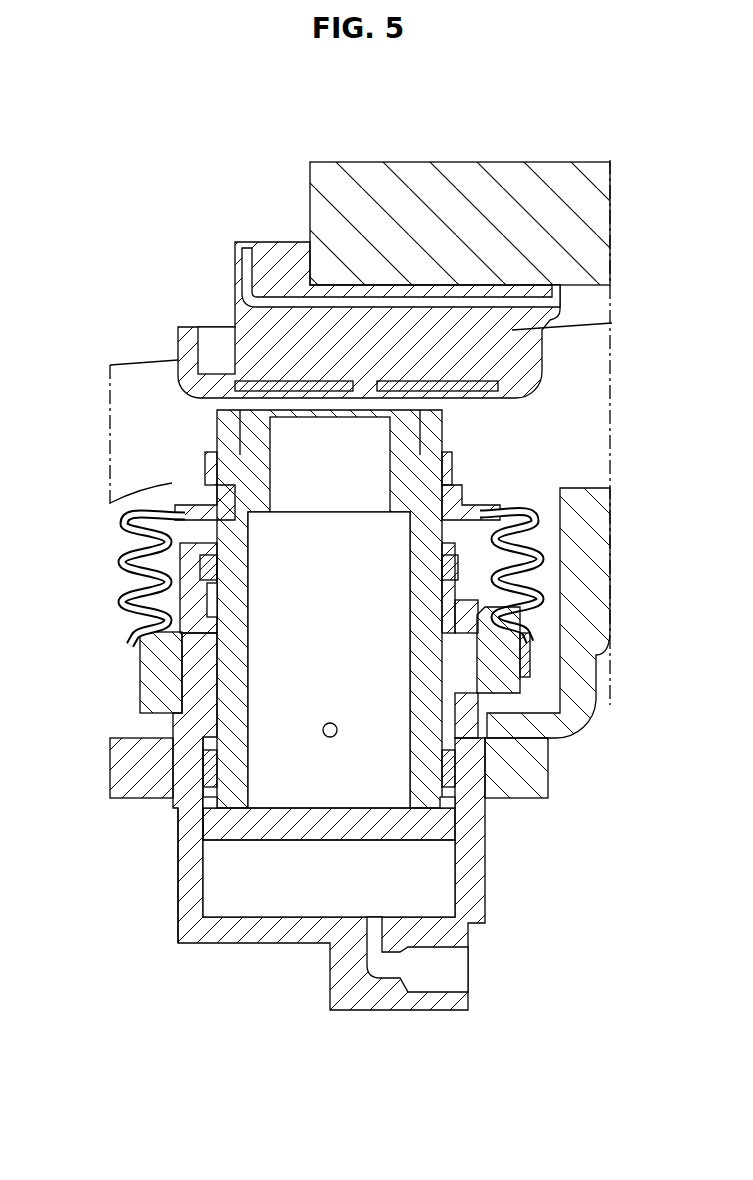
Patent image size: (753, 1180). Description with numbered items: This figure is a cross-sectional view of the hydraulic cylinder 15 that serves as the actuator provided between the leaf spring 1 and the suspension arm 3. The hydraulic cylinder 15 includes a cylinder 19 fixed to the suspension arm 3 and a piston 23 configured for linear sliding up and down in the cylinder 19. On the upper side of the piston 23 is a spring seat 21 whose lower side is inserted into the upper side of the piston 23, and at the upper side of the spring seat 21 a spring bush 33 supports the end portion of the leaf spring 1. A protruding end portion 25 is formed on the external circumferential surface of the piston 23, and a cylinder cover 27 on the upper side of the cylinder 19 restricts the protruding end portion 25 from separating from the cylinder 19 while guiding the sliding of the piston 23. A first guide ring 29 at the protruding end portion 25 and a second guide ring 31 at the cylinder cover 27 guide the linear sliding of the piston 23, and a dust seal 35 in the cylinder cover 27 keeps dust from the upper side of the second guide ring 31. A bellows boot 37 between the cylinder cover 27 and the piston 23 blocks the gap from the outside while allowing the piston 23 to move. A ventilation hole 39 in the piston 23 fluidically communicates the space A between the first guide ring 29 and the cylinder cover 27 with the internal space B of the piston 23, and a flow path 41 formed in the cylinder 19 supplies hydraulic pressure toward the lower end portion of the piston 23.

The leaf spring 1 is at (446, 186).
The suspension arm 3 is at (590, 538).
The hydraulic cylinder 15 is at (182, 1035).
The cylinder 19 is at (190, 875).
The spring seat 21 is at (187, 330).
The piston 23 is at (265, 827).
The protruding end portion 25 is at (440, 792).
The cylinder cover 27 is at (160, 680).
The first guide ring 29 is at (205, 770).
The second guide ring 31 is at (180, 640).
The spring bush 33 is at (262, 243).
The dust seal 35 is at (200, 560).
The bellows boot 37 is at (125, 600).
The ventilation hole 39 is at (335, 737).
The flow path 41 is at (373, 953).
The space A is at (450, 680).
The internal space B is at (358, 612).